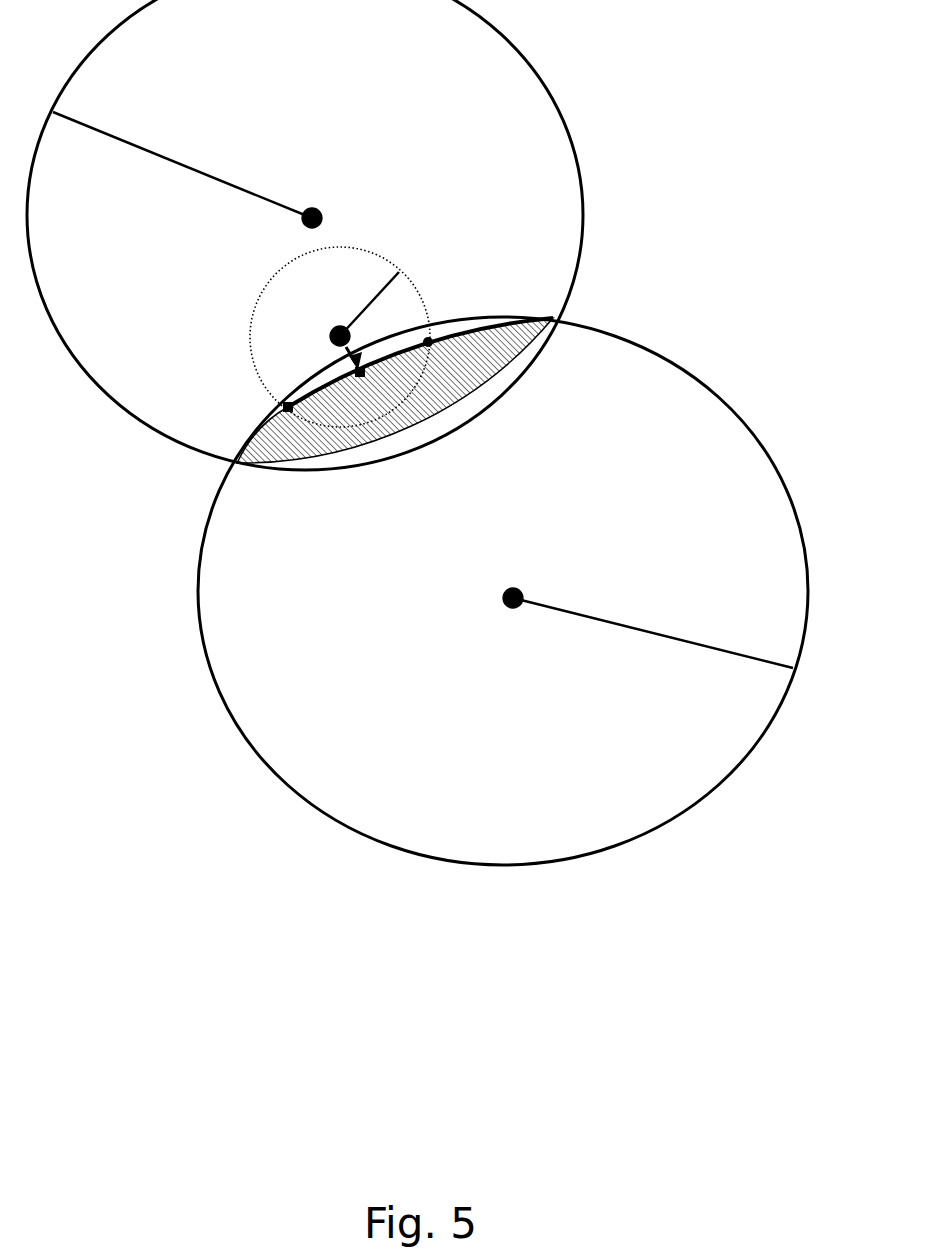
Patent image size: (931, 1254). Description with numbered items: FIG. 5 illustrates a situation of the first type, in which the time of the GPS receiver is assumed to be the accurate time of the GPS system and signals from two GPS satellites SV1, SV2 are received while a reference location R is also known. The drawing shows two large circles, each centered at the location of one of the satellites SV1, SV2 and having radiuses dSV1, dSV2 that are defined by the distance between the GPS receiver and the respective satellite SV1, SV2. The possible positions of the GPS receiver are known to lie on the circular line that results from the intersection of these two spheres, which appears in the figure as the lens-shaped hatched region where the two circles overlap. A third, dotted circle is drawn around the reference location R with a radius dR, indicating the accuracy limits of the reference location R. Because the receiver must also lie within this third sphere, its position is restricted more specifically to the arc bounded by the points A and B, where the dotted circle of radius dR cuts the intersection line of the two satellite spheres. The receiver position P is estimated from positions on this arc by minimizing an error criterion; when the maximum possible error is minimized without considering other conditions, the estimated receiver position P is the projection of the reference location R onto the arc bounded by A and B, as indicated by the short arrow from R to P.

The first GPS satellite SV1 is at (305, 235).
The second GPS satellite SV2 is at (503, 591).
The reference location R is at (340, 337).
The radius dSV1 is at (182, 165).
The radius dSV2 is at (653, 634).
The radius dR is at (366, 304).
The arc endpoint A is at (443, 355).
The arc endpoint B is at (290, 426).
The estimated receiver position P is at (369, 388).